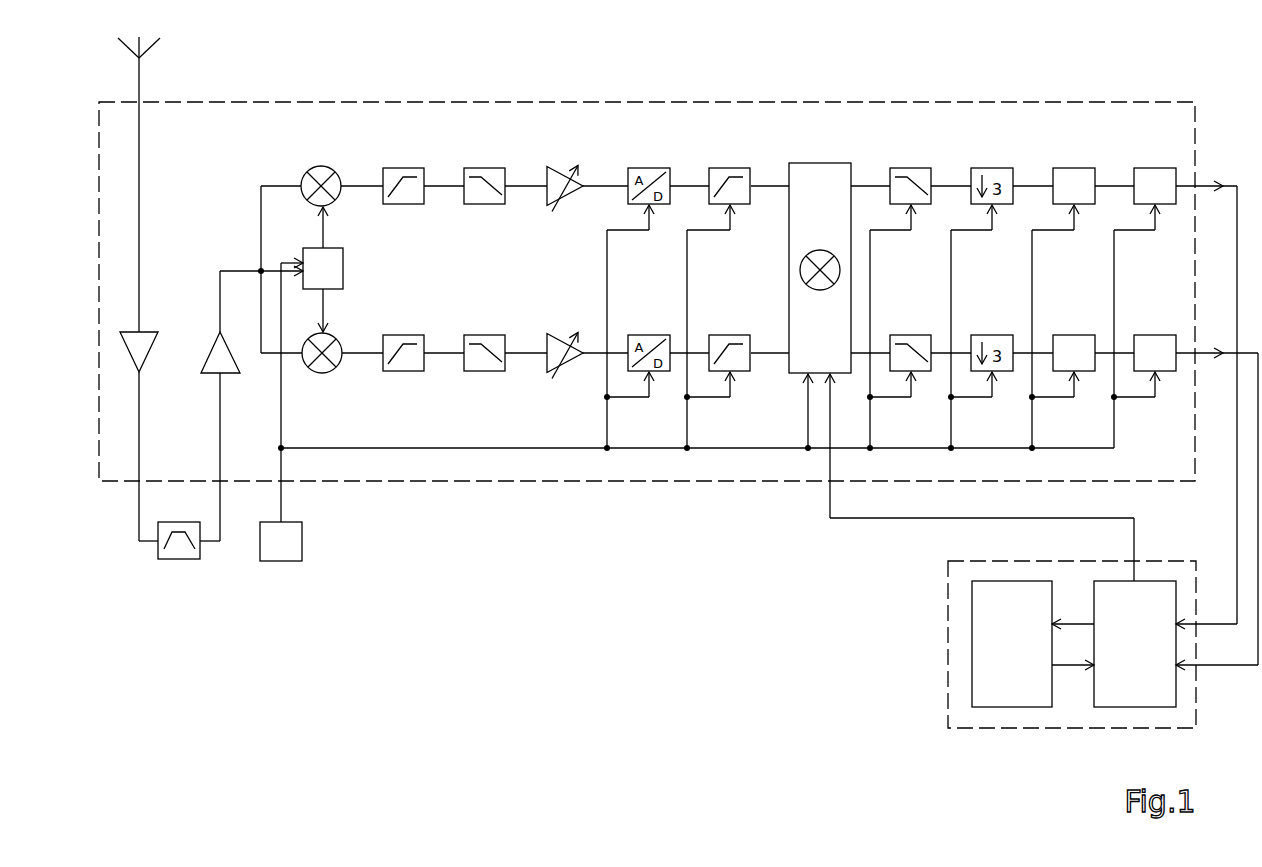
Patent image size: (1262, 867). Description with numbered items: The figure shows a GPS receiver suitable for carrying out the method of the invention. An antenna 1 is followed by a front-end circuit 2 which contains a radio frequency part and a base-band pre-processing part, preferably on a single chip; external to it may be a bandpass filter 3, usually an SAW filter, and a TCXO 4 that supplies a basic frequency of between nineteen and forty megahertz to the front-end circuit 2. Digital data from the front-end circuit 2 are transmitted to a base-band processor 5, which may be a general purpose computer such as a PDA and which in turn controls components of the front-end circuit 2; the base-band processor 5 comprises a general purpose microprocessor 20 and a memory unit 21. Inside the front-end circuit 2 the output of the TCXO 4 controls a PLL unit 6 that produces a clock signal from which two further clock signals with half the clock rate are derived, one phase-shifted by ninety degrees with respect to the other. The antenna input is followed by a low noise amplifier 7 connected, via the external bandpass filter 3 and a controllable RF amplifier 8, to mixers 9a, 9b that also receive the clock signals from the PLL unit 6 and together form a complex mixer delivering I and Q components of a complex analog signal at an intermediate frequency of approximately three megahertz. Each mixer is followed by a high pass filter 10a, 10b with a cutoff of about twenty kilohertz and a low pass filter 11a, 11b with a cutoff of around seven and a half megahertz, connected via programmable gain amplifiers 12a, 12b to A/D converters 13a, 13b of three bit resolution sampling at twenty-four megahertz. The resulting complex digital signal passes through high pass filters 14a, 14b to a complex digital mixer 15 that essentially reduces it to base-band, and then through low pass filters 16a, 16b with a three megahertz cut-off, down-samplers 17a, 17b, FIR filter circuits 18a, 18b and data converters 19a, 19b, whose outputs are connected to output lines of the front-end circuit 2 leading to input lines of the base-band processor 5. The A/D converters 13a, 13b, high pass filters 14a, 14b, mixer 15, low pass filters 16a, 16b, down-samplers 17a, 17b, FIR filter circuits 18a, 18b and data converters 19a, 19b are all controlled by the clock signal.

The antenna 1 is at (147, 57).
The front-end circuit 2 is at (495, 98).
The bandpass filter 3 is at (175, 561).
The TCXO 4 is at (278, 562).
The base-band processor 5 is at (1011, 733).
The PLL unit 6 is at (331, 292).
The low noise amplifier 7 is at (149, 356).
The controllable RF amplifier 8 is at (228, 376).
The mixer 9a is at (326, 167).
The mixer 9b is at (325, 374).
The high pass filter 10a is at (405, 167).
The high pass filter 10b is at (412, 372).
The low pass filter 11a is at (486, 167).
The low pass filter 11b is at (494, 372).
The programmable gain amplifier 12a is at (564, 167).
The programmable gain amplifier 12b is at (575, 372).
The A/D converter 13a is at (650, 167).
The A/D converter 13b is at (662, 372).
The high pass filter 14a is at (732, 167).
The high pass filter 14b is at (741, 372).
The complex digital mixer 15 is at (820, 162).
The low pass filter 16a is at (913, 167).
The low pass filter 16b is at (923, 372).
The down-sampler 17a is at (994, 167).
The down-sampler 17b is at (1004, 372).
The FIR filter circuit 18a is at (1076, 167).
The FIR filter circuit 18b is at (1085, 372).
The data converter 19a is at (1156, 167).
The data converter 19b is at (1166, 372).
The general purpose microprocessor 20 is at (1123, 650).
The memory unit 21 is at (999, 650).